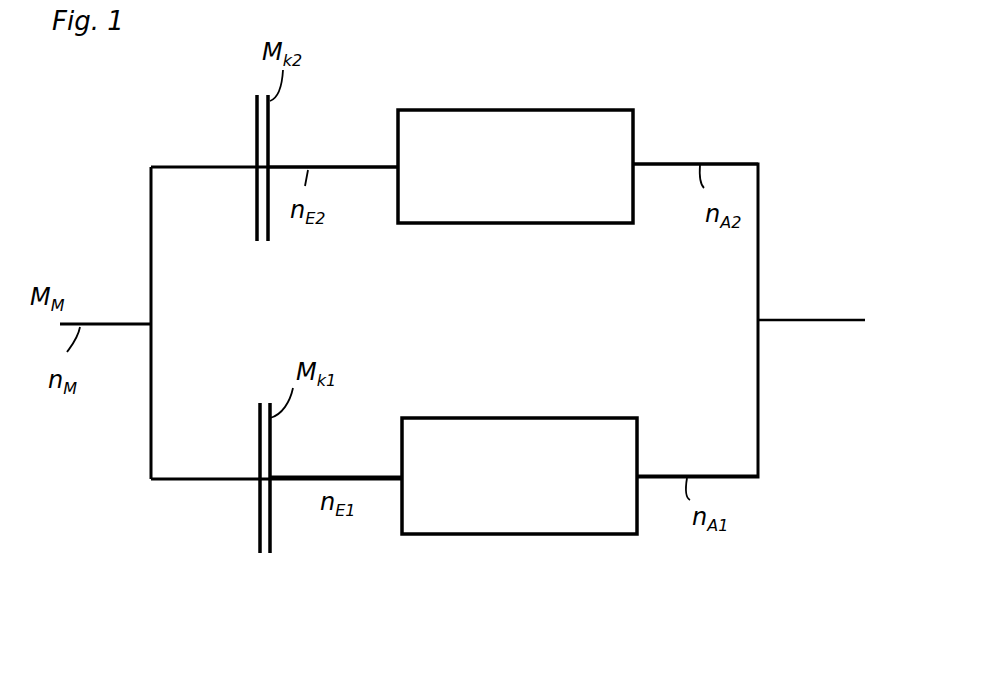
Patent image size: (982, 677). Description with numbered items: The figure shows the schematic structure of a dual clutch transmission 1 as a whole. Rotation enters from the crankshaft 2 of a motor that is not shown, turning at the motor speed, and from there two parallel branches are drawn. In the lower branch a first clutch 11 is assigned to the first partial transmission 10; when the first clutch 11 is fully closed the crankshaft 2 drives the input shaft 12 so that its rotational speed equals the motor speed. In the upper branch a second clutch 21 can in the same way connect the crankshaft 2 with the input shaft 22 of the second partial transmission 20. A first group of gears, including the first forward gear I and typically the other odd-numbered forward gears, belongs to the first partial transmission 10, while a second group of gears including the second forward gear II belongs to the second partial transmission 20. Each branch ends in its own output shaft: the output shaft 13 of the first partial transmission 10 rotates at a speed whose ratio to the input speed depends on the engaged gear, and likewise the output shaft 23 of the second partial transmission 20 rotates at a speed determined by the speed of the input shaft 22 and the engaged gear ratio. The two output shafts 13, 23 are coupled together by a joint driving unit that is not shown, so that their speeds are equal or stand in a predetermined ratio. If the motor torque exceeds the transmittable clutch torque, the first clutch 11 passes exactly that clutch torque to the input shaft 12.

The dual clutch transmission 1 is at (742, 92).
The crankshaft 2 is at (96, 322).
The first partial transmission 10 is at (519, 476).
The first clutch 11 is at (273, 533).
The input shaft 12 is at (352, 475).
The output shaft 13 is at (657, 472).
The second partial transmission 20 is at (515, 166).
The second clutch 21 is at (270, 128).
The input shaft 22 is at (358, 165).
The output shaft 23 is at (660, 162).
The first gear I is at (560, 515).
The second gear II is at (542, 145).